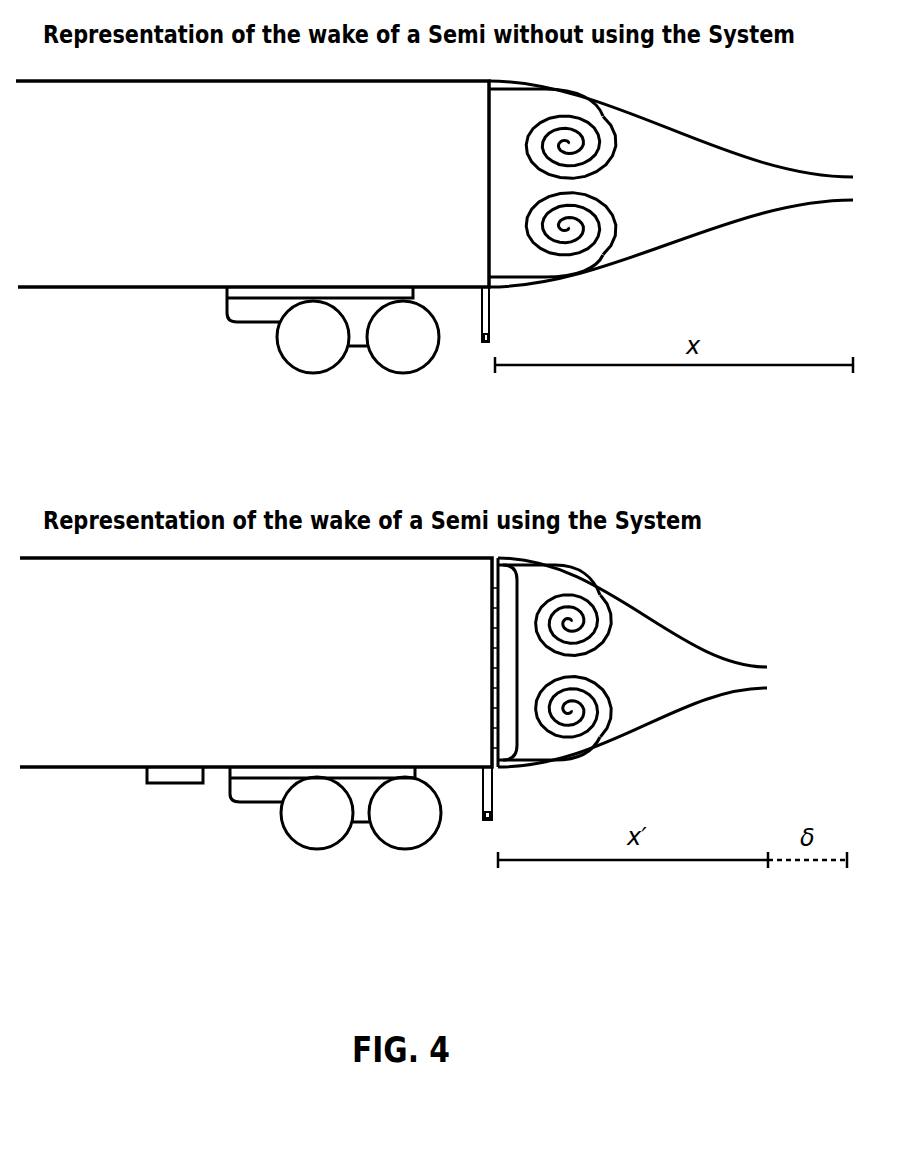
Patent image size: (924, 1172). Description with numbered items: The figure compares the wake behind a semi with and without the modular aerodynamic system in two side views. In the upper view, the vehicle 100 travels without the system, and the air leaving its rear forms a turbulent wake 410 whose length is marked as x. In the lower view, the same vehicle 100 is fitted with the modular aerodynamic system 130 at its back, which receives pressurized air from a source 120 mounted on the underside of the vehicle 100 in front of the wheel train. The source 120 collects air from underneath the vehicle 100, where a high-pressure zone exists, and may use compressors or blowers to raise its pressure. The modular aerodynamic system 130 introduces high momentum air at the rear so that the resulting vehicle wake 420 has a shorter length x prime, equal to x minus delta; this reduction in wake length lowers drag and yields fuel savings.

The vehicle 100 is at (97, 287).
The source 120 is at (163, 783).
The modular aerodynamic system 130 is at (505, 723).
The turbulent wake 410 is at (598, 288).
The vehicle wake 420 is at (552, 768).